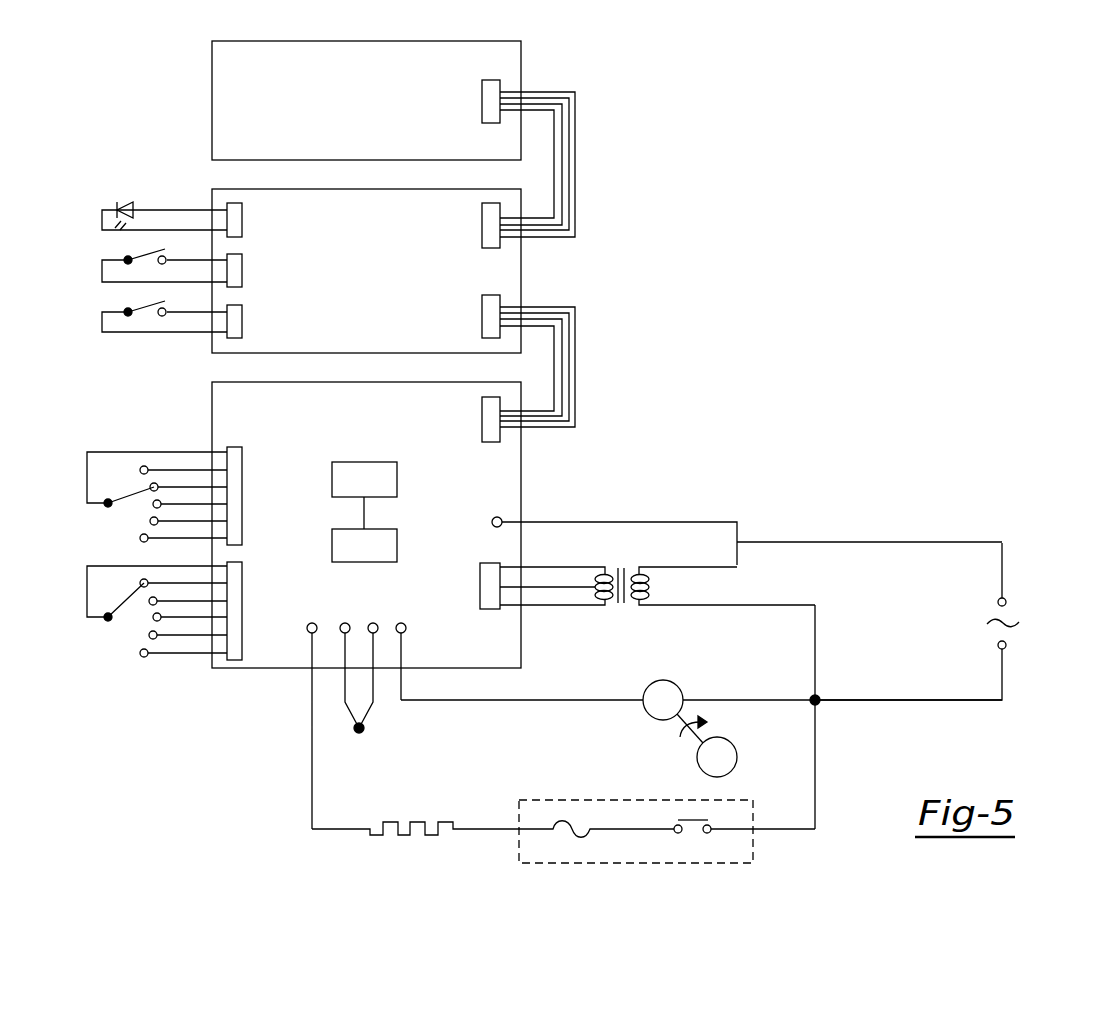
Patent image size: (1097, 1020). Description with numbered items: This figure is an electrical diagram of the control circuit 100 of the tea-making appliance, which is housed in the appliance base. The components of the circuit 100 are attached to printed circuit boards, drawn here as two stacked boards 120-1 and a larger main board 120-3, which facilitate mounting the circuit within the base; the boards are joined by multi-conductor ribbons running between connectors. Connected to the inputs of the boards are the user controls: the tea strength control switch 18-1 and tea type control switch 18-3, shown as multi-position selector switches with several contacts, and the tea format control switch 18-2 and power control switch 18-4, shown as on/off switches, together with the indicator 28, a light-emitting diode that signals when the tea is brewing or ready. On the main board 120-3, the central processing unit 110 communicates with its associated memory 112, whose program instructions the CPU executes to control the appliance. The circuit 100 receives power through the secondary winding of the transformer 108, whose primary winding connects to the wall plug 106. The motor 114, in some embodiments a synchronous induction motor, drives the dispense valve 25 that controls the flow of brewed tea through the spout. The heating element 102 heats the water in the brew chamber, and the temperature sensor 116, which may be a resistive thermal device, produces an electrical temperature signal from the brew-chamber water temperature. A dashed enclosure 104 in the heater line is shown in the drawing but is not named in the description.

The control circuit 100 is at (696, 200).
The printed circuit board 120-1 is at (381, 110).
The printed circuit board 120-3 is at (381, 425).
The indicator 28 is at (122, 203).
The tea strength control switch 18-1 is at (87, 472).
The tea format control switch 18-2 is at (102, 270).
The tea type control switch 18-3 is at (87, 592).
The power control switch 18-4 is at (102, 320).
The memory 112 is at (397, 482).
The central processing unit 110 is at (397, 547).
The transformer 108 is at (630, 568).
The wall plug 106 is at (1010, 575).
The motor 114 is at (672, 680).
The dispense valve 25 is at (728, 737).
The temperature sensor 116 is at (370, 710).
The heating element 102 is at (403, 838).
The thermostat and fuse assembly 104 is at (755, 850).